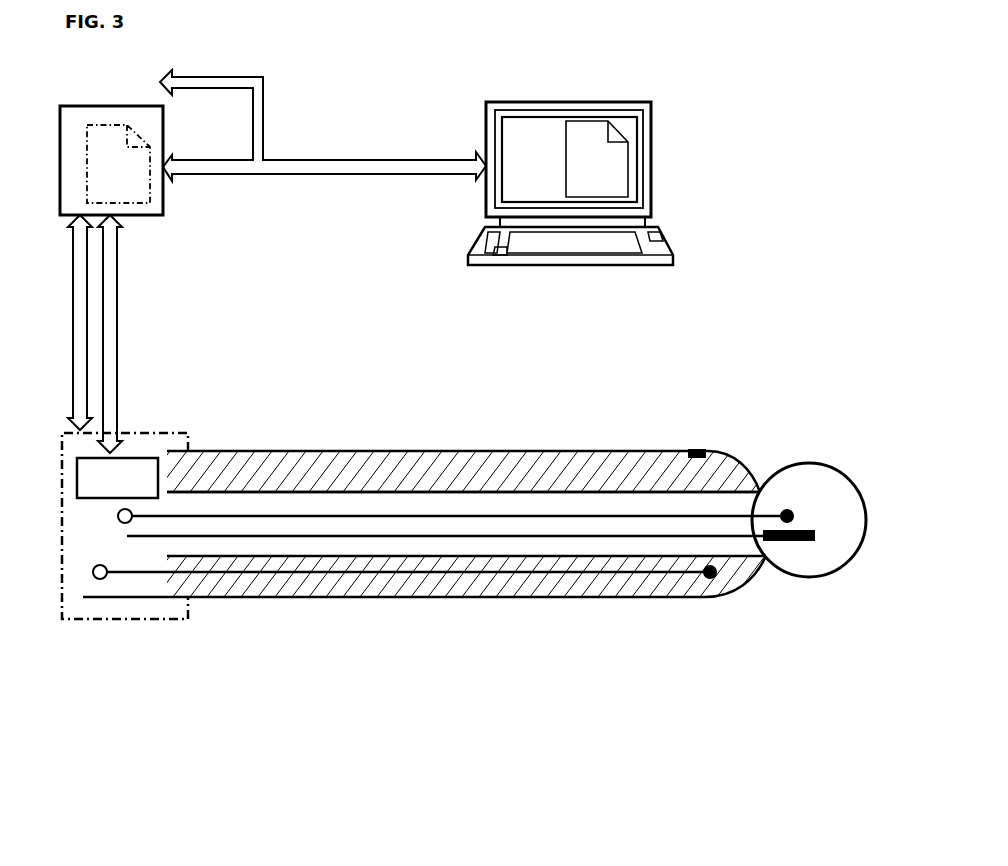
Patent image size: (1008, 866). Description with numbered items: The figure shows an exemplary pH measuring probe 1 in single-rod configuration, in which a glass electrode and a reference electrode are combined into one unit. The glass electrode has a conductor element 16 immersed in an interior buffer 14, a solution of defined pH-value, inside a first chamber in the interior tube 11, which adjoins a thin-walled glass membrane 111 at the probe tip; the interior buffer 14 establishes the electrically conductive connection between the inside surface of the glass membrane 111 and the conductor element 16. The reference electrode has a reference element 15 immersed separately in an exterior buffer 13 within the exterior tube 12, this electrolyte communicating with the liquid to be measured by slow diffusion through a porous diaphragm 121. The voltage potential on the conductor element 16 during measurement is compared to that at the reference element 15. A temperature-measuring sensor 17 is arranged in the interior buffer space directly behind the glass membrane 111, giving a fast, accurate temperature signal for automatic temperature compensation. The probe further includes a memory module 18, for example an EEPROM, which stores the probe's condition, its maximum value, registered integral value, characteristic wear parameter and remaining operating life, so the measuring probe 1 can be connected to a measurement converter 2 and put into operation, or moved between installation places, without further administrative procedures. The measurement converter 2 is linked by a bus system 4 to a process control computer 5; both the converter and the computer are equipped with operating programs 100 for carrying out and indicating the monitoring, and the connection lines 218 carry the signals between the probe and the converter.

The measuring probe 1 is at (697, 372).
The measurement converter 2 is at (111, 160).
The bus system 4 is at (408, 170).
The process control computer 5 is at (570, 183).
The interior tube 11 is at (337, 490).
The exterior tube 12 is at (528, 450).
The exterior buffer 13 is at (360, 475).
The interior buffer 14 is at (480, 538).
The reference element 15 is at (662, 574).
The conductor element 16 is at (585, 514).
The temperature-measuring sensor 17 is at (795, 540).
The memory module 18 is at (125, 526).
The operating programs 100 is at (357, 162).
The glass membrane 111 is at (795, 460).
The diaphragm 121 is at (690, 450).
The connection lines 218 is at (118, 312).